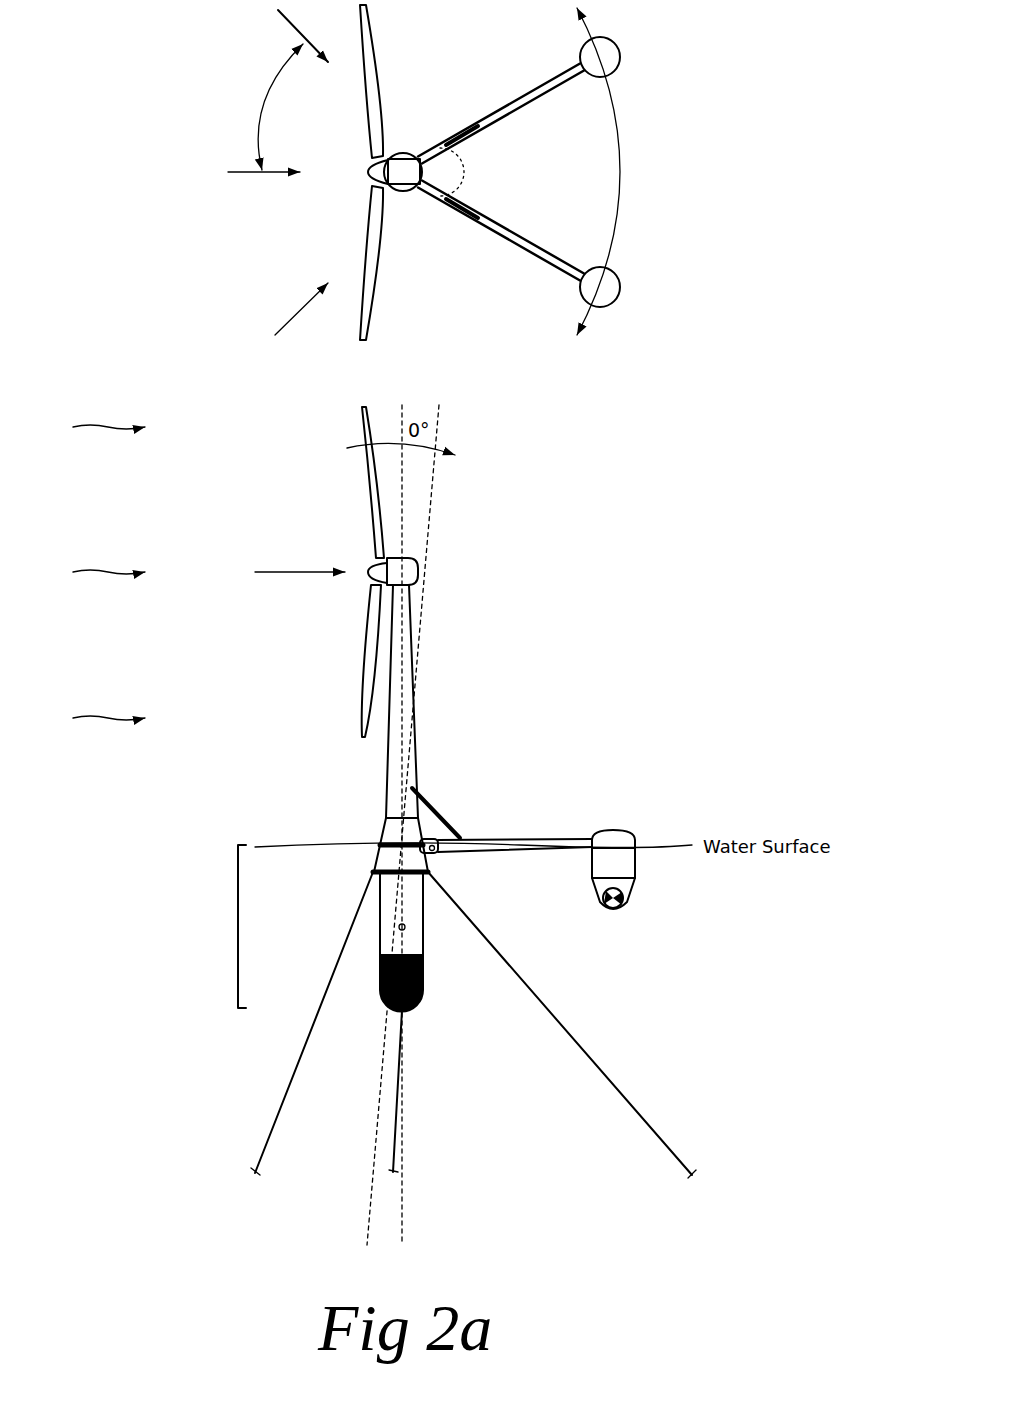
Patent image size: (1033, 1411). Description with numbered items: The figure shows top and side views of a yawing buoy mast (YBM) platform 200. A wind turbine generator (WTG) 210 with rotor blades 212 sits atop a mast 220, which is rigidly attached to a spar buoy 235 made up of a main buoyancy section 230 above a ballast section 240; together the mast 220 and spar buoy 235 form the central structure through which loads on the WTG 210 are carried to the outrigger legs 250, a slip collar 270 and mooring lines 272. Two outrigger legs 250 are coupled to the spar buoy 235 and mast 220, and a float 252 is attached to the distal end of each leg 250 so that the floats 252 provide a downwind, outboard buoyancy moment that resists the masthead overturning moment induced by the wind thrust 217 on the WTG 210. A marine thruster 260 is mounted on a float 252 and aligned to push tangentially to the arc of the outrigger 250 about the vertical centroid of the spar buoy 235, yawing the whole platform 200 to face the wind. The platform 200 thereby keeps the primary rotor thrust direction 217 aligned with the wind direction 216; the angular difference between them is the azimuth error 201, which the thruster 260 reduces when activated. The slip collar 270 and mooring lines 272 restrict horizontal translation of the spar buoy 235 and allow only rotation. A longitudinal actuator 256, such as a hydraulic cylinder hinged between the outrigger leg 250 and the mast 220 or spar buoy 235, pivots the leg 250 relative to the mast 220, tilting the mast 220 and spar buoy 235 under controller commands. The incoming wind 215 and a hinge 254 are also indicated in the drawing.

The YBM platform 200 is at (441, 86).
The azimuth error 201 is at (288, 107).
The WTG 210 is at (420, 556).
The rotor blades 212 is at (362, 727).
The wind 215 is at (109, 572).
The wind direction 216 is at (283, 16).
The primary rotor thrust direction 217 is at (286, 372).
The mast 220 is at (415, 757).
The main buoyancy section 230 is at (423, 938).
The spar buoy 235 is at (219, 926).
The ballast section 240 is at (423, 972).
The outrigger leg 250 is at (520, 232).
The float 252 is at (623, 288).
The hinge joint 254 is at (438, 852).
The longitudinal actuator 256 is at (455, 828).
The marine thruster 260 is at (625, 905).
The slip collar 270 is at (375, 874).
The mooring lines 272 is at (270, 1133).